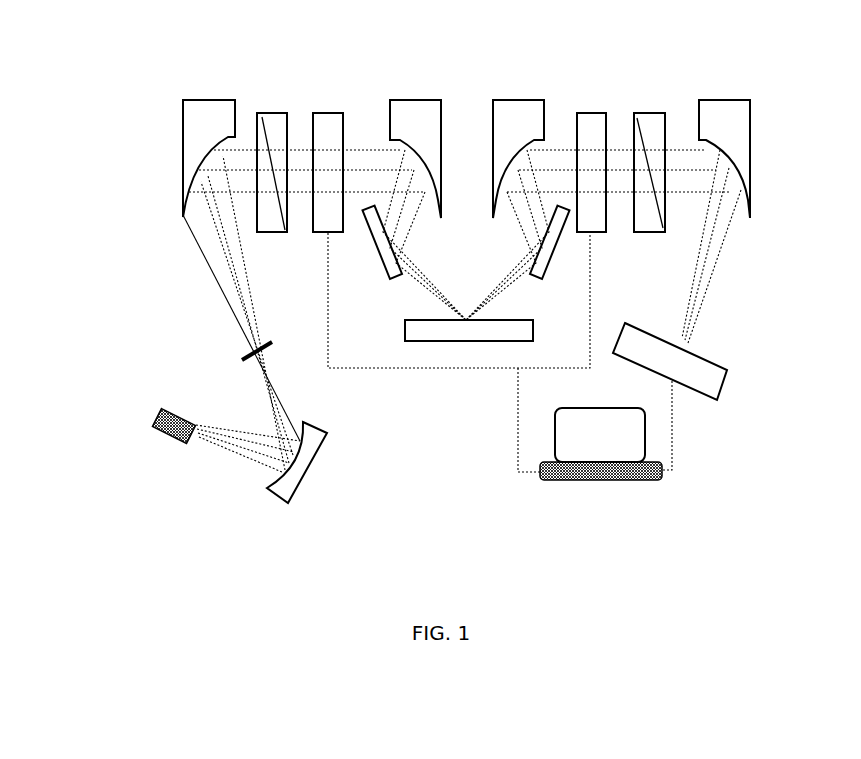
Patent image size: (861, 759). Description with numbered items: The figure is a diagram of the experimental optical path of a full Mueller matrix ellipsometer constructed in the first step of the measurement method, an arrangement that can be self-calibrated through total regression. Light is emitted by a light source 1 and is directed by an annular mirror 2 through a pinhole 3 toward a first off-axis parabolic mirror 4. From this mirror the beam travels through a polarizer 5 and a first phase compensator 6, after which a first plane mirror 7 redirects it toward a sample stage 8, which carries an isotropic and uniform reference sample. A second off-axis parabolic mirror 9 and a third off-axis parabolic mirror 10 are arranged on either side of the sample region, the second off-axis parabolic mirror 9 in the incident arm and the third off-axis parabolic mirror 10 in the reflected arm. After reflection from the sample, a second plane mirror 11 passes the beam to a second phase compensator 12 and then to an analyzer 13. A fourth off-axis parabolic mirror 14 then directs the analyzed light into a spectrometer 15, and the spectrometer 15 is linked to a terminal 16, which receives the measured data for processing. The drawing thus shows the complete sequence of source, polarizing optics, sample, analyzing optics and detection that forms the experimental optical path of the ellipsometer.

The light source 1 is at (162, 407).
The annular mirror 2 is at (245, 357).
The pinhole 3 is at (290, 462).
The first off-axis parabolic mirror 4 is at (222, 118).
The polarizer 5 is at (275, 122).
The first phase compensator 6 is at (333, 125).
The first plane mirror 7 is at (380, 222).
The sample stage 8 is at (455, 334).
The second off-axis parabolic mirror 9 is at (425, 118).
The third off-axis parabolic mirror 10 is at (510, 125).
The second plane mirror 11 is at (553, 243).
The second phase compensator 12 is at (595, 135).
The analyzer 13 is at (652, 127).
The fourth off-axis parabolic mirror 14 is at (732, 115).
The spectrometer 15 is at (682, 372).
The terminal 16 is at (597, 442).